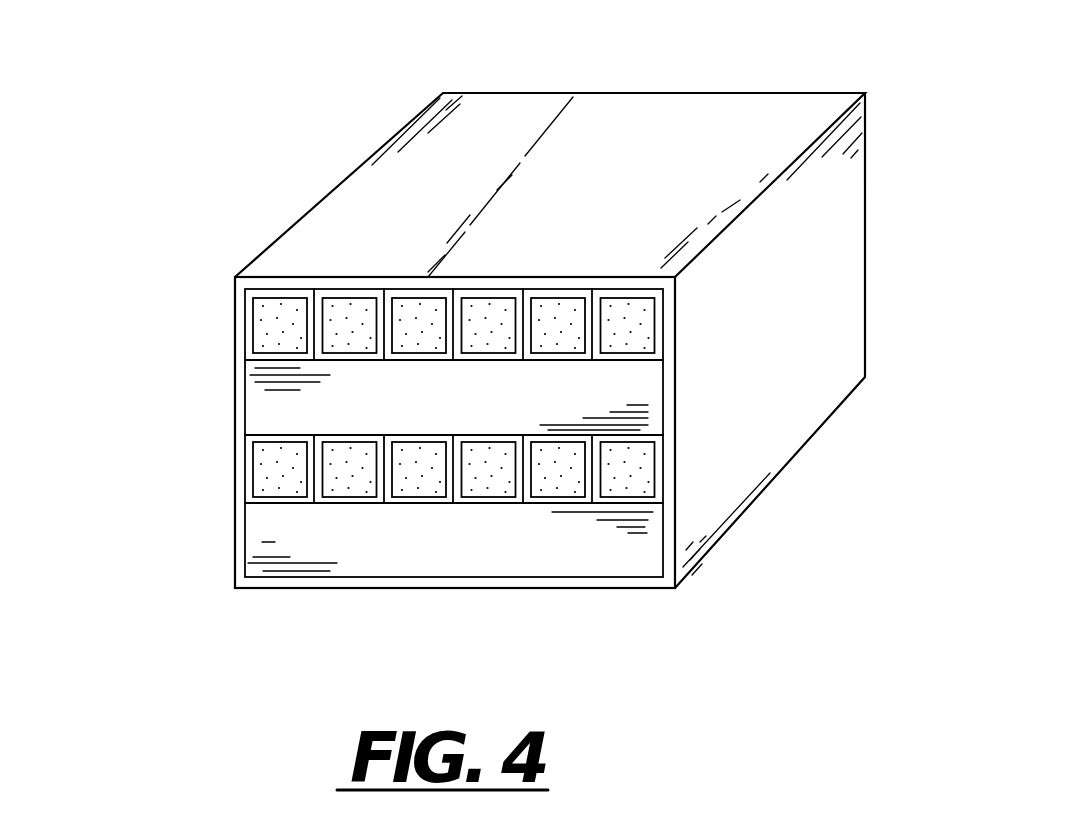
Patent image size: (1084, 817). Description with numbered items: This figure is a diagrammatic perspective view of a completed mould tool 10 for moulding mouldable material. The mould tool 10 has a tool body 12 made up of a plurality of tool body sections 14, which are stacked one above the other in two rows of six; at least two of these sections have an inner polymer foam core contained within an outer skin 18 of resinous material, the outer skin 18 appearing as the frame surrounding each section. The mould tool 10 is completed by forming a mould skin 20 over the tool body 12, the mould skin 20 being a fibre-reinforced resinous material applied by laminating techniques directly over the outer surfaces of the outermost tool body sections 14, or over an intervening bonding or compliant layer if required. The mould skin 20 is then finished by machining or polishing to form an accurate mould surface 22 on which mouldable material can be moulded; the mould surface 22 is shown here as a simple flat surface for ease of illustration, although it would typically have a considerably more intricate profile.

The mould tool 10 is at (148, 336).
The tool body 12 is at (370, 538).
The tool body sections 14 is at (473, 315).
The outer skin 18 is at (660, 300).
The mould skin 20 is at (608, 108).
The mould surface 22 is at (534, 187).